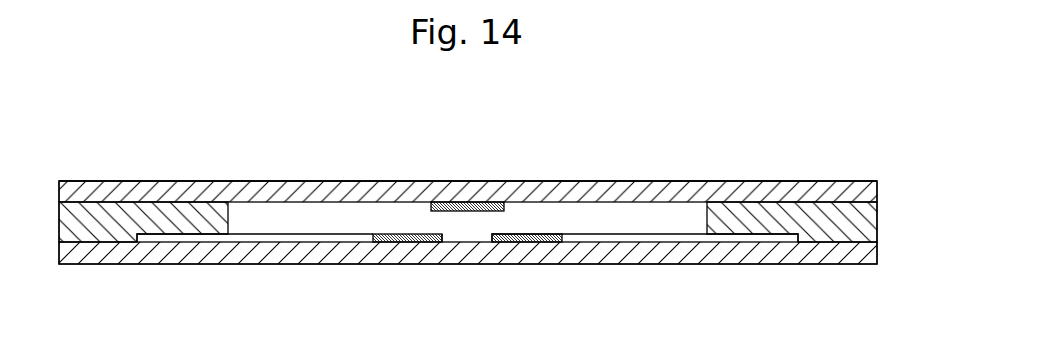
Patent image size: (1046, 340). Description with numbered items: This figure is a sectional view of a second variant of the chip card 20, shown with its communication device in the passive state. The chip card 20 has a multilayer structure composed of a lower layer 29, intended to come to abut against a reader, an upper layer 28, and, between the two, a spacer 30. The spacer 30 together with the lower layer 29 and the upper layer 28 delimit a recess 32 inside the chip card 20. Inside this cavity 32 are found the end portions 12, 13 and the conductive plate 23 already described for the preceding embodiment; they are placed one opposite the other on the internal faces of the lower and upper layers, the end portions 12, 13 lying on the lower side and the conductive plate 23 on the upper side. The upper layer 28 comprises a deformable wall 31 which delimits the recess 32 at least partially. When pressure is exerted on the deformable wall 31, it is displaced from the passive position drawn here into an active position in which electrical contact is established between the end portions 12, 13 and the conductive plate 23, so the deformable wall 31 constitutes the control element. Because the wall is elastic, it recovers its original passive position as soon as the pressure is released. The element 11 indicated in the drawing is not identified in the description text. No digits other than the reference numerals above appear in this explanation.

The chip card 20 is at (893, 150).
The upper layer 28 is at (152, 197).
The deformable wall 31 is at (545, 170).
The spacer 30 is at (97, 213).
The recess 32 is at (630, 214).
The lower layer 29 is at (128, 253).
The vibrating plate 11 is at (300, 234).
The end portion 13 is at (423, 241).
The end portion 12 is at (528, 241).
The conductive plate 23 is at (461, 208).